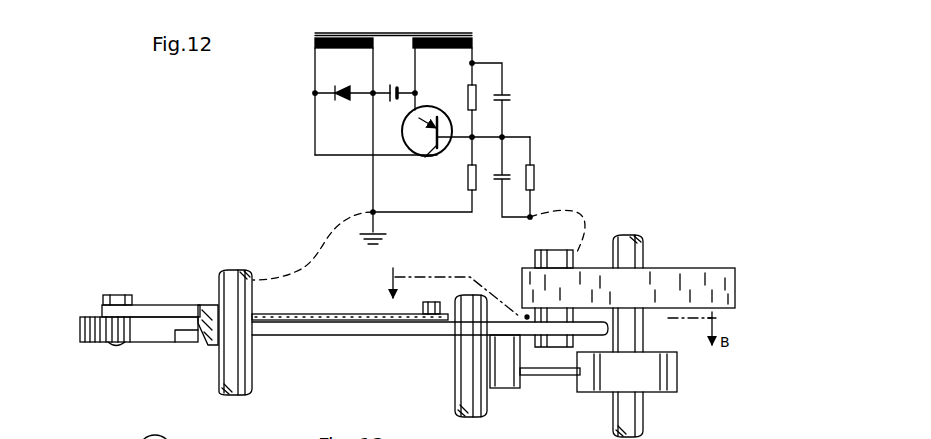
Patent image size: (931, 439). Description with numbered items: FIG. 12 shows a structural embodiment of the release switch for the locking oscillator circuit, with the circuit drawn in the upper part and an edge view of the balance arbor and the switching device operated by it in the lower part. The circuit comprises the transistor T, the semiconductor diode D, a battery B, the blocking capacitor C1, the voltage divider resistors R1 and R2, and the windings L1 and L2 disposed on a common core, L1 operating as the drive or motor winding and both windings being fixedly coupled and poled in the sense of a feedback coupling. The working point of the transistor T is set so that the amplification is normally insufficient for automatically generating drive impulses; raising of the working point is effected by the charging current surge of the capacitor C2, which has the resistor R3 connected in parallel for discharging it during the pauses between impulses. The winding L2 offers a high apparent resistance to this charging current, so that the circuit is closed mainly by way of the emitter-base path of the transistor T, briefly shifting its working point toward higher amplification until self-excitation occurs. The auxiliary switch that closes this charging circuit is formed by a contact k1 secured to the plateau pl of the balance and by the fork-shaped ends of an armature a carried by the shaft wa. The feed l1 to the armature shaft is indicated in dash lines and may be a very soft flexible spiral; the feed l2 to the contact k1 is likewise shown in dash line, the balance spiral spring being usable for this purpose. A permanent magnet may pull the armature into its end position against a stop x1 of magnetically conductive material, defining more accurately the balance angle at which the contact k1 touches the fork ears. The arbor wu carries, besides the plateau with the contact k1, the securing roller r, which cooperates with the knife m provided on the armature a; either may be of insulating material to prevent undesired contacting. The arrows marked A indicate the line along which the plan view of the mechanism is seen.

The drive winding L1 is at (344, 125).
The winding L2 is at (442, 74).
The semiconductor diode D is at (342, 101).
The battery B is at (395, 89).
The transistor T is at (383, 131).
The voltage divider resistor R1 is at (461, 111).
The voltage divider resistor R2 is at (424, 174).
The resistor R3 is at (541, 177).
The blocking capacitor C1 is at (502, 100).
The capacitor C2 is at (505, 177).
The feed to the armature shaft l1 is at (317, 243).
The feed to the contact l2 is at (582, 216).
The line A—B A is at (453, 293).
The armature shaft wa is at (252, 373).
The armature a is at (353, 335).
The stop x1 is at (455, 402).
The plateau pl is at (681, 282).
The contact k1 is at (556, 256).
The knife m is at (553, 376).
The securing roller r is at (678, 384).
The balance arbor wu is at (643, 418).